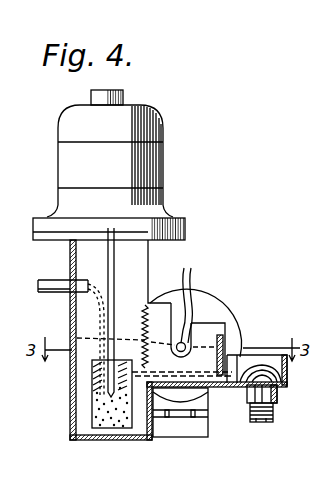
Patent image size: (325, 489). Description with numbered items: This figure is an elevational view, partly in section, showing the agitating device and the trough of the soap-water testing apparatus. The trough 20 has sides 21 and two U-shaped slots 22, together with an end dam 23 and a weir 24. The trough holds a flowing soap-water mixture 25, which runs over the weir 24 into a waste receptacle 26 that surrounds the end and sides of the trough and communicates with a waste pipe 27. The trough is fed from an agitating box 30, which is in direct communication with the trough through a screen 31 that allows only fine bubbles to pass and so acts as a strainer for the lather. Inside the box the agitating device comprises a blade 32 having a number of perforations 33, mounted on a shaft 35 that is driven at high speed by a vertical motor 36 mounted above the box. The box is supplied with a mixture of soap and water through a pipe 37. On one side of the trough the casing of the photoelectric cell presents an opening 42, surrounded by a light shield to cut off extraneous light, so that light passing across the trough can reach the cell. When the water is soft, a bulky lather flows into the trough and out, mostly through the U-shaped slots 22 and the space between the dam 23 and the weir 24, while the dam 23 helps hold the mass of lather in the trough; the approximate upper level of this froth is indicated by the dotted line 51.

The trough 20 is at (210, 379).
The sides 21 is at (212, 323).
The U-shaped slots 22 is at (197, 325).
The end dam 23 is at (225, 338).
The weir 24 is at (238, 375).
The soap-water mixture 25 is at (190, 375).
The waste receptacle 26 is at (287, 376).
The waste pipe 27 is at (274, 408).
The agitating box 30 is at (73, 409).
The screen 31 is at (145, 328).
The blade 32 is at (105, 418).
The perforations 33 is at (127, 426).
The shaft 35 is at (115, 279).
The vertical motor 36 is at (158, 153).
The pipe 37 is at (52, 274).
The opening 42 is at (190, 297).
The dotted line 51 is at (163, 343).